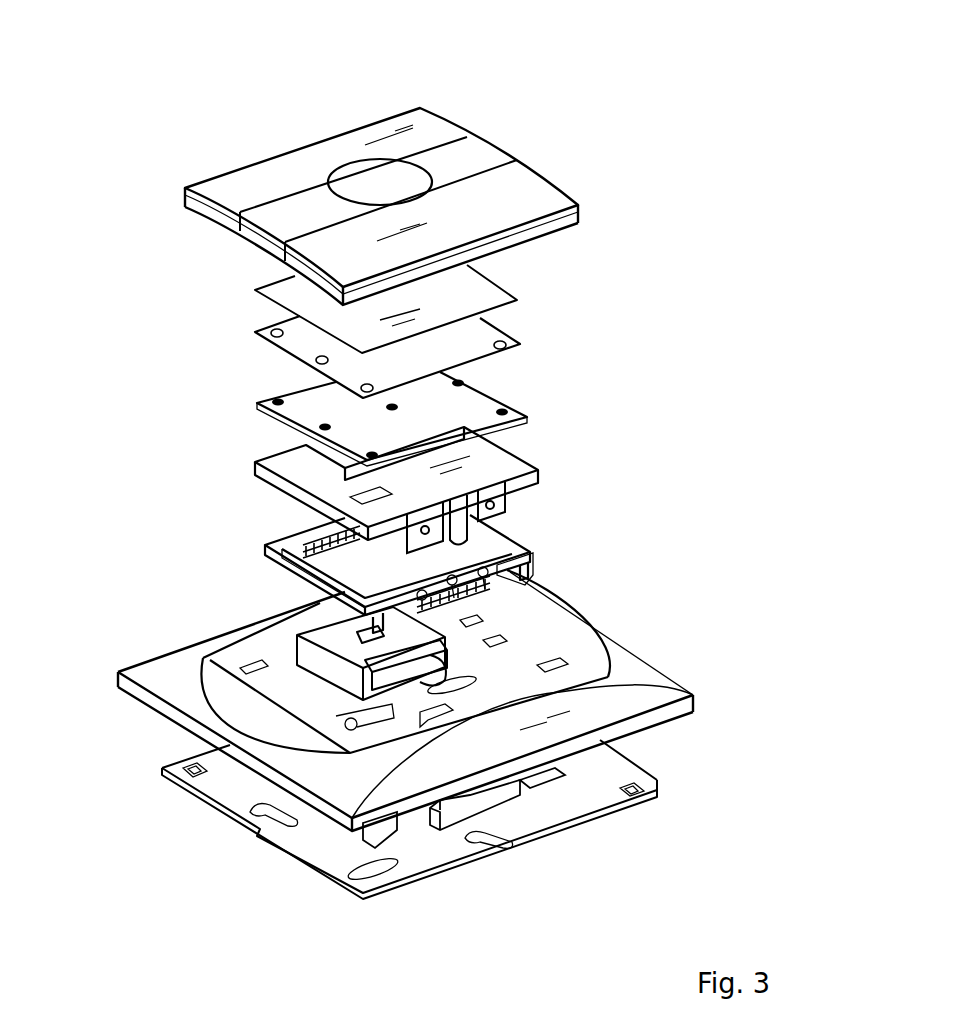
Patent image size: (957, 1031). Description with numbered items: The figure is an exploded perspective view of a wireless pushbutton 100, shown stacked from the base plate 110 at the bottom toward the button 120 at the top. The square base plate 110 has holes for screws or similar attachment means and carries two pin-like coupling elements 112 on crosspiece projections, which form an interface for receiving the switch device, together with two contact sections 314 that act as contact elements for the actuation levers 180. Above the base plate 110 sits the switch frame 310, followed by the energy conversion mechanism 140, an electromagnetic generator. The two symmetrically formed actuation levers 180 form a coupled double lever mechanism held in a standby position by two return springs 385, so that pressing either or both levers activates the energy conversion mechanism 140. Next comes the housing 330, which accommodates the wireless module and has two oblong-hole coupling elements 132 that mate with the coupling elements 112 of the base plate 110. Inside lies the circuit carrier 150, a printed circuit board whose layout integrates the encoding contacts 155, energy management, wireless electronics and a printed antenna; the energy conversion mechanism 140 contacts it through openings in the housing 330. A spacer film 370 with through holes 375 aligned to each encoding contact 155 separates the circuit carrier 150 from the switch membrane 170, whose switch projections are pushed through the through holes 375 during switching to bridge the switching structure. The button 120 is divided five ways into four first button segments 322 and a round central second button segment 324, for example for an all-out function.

The wireless pushbutton 100 is at (181, 96).
The base plate 110 is at (233, 802).
The coupling elements 112 is at (600, 750).
The button 120 is at (513, 137).
The coupling elements 132 is at (493, 522).
The energy conversion mechanism 140 is at (297, 633).
The circuit carrier 150 is at (260, 410).
The encoding contacts 155 is at (263, 402).
The switch membrane 170 is at (258, 293).
The actuation levers 180 is at (280, 565).
The switch frame 310 is at (198, 720).
The contact sections 314 is at (368, 837).
The first button segments 322 is at (320, 148).
The second button segment 324 is at (365, 174).
The housing 330 is at (515, 453).
The spacer film 370 is at (450, 348).
The through holes 375 is at (517, 340).
The return springs 385 is at (285, 533).